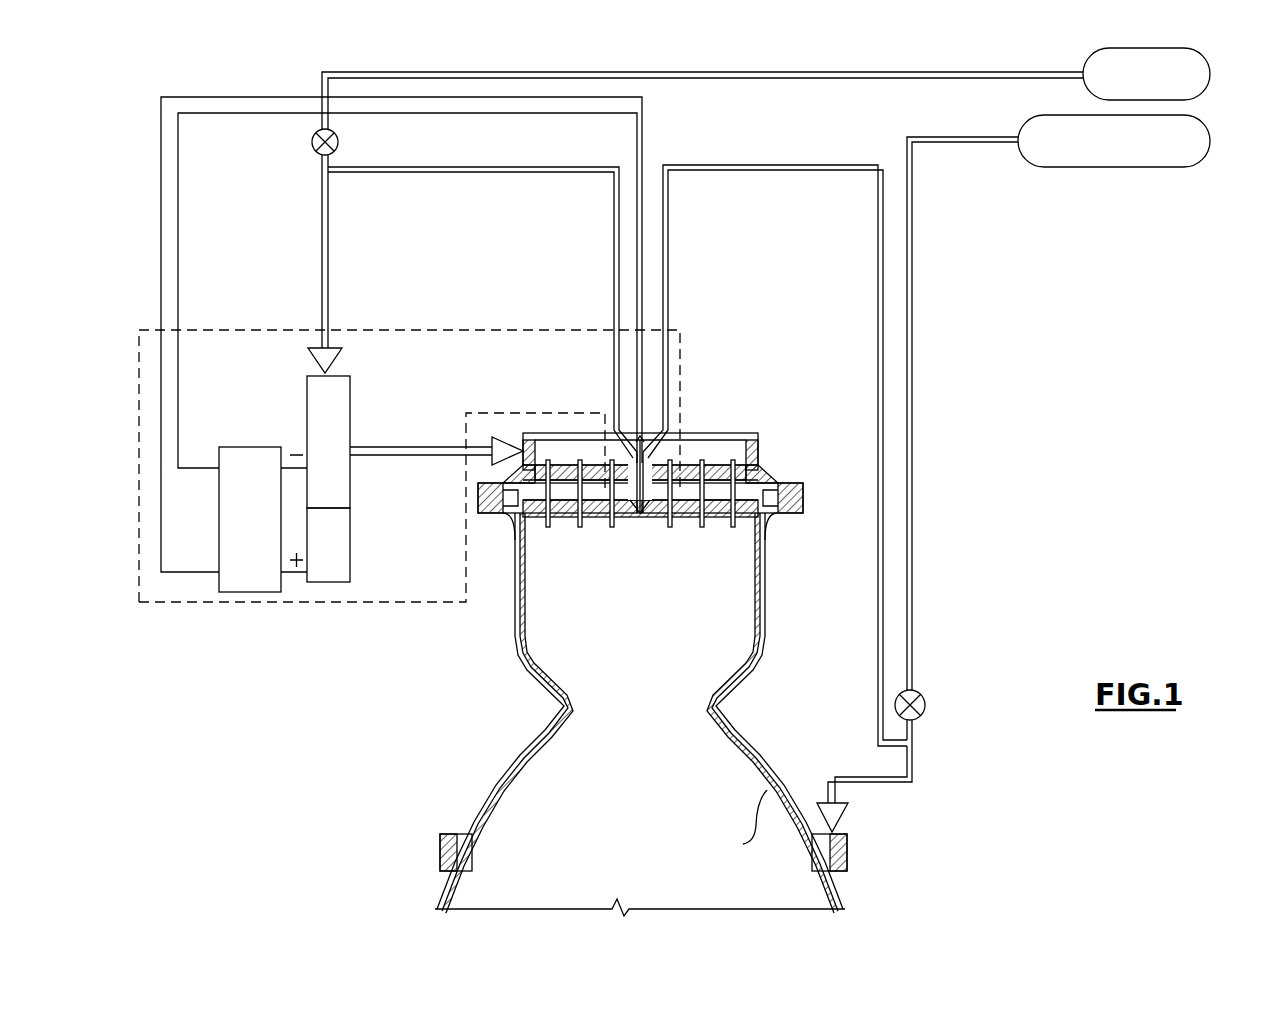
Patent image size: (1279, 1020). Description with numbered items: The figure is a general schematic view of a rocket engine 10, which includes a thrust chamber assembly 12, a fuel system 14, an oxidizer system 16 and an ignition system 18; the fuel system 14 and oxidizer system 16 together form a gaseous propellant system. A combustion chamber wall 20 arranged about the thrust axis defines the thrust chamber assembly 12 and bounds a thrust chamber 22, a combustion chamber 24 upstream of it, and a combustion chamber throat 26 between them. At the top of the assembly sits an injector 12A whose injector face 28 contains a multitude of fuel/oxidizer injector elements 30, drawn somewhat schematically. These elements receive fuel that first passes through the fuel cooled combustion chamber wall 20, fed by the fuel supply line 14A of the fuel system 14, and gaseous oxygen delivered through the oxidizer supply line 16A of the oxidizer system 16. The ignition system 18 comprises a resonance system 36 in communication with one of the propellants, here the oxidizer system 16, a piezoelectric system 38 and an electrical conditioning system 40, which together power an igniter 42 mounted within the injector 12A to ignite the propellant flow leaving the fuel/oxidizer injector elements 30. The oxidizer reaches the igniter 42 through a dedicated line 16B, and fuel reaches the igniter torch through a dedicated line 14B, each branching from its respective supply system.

The rocket engine 10 is at (1030, 340).
The thrust chamber assembly 12 is at (362, 736).
The injector 12A is at (730, 425).
The fuel system 14 is at (1120, 175).
The fuel supply line 14A is at (912, 550).
The dedicated fuel line 14B is at (822, 165).
The oxidizer system 16 is at (1220, 72).
The oxidizer supply line 16A is at (435, 447).
The dedicated oxidizer line 16B is at (560, 167).
The ignition system 18 is at (141, 612).
The combustion chamber wall 20 is at (503, 762).
The thrust chamber 22 is at (585, 889).
The combustion chamber 24 is at (660, 628).
The combustion chamber throat 26 is at (652, 729).
The injector face 28 is at (680, 520).
The fuel/oxidizer injector elements 30 is at (615, 527).
The resonance system 36 is at (302, 420).
The piezoelectric system 38 is at (348, 528).
The electrical conditioning system 40 is at (243, 440).
The igniter 42 is at (657, 460).